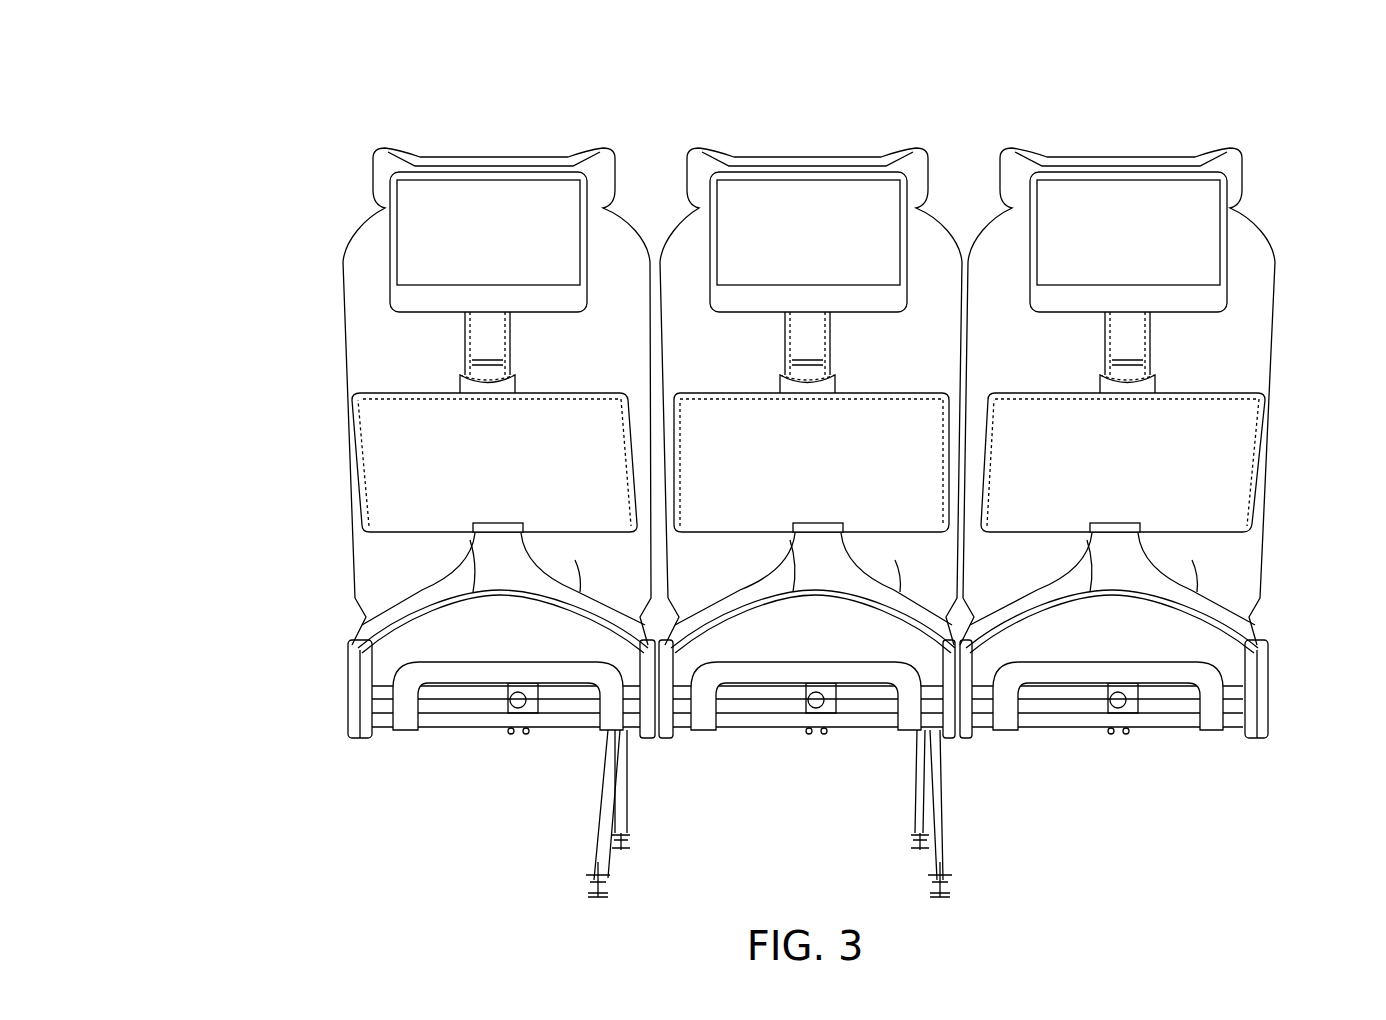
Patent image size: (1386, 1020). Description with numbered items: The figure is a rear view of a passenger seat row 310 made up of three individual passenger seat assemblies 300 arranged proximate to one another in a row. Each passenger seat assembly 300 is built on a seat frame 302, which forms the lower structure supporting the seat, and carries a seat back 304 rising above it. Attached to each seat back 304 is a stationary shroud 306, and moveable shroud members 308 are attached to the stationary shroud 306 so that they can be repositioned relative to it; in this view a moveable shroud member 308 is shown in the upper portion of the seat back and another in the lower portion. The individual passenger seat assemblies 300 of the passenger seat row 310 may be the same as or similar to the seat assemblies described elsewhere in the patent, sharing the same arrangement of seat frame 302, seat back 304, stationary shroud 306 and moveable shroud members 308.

The passenger seat assembly 300 is at (385, 128).
The seat frame 302 is at (378, 722).
The seat back 304 is at (680, 237).
The stationary shroud 306 is at (433, 590).
The moveable shroud member 308 is at (940, 368).
The passenger seat row 310 is at (170, 112).